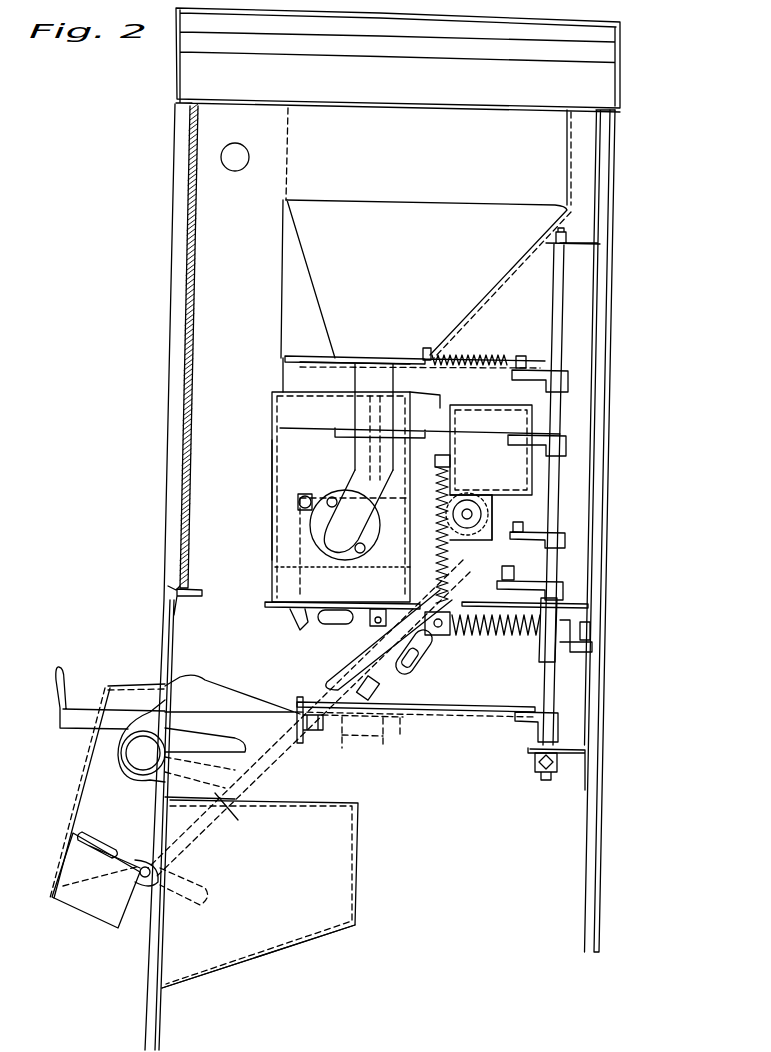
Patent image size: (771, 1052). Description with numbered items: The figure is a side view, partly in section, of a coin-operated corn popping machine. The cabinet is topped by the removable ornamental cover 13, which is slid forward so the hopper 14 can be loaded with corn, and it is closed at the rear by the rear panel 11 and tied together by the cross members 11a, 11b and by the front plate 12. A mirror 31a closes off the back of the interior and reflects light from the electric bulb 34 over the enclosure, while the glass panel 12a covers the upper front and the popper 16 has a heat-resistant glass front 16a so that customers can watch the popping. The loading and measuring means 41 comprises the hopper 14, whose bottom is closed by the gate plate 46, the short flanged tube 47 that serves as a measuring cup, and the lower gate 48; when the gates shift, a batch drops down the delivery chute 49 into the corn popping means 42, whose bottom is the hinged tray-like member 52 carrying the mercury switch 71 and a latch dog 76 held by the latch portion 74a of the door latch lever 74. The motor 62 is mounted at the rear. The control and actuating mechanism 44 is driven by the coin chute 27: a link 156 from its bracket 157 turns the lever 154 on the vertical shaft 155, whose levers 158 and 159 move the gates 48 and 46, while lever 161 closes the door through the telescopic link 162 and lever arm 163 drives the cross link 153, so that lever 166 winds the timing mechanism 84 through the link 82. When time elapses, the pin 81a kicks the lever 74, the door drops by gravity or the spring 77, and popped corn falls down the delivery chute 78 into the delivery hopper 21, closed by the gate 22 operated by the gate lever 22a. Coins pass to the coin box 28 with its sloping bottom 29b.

The ornamental cover 13 is at (603, 86).
The rear panel 11 is at (611, 392).
The cross member 11a is at (604, 178).
The cross member 11b is at (576, 752).
The mirror 31a is at (220, 238).
The electric bulb 34 is at (232, 157).
The front plate 12 is at (180, 596).
The latch dog 76 is at (184, 606).
The hopper 14 is at (517, 233).
The loading and measuring means 41 is at (378, 347).
The gate plate 46 is at (297, 360).
The vertical shaft 155 is at (560, 298).
The lever 159 is at (533, 372).
The lever 158 is at (545, 440).
The lever 166 is at (524, 528).
The control and actuating mechanism 44 is at (553, 567).
The cross link 153 is at (512, 573).
The lever arm 163 is at (524, 586).
The lever 161 is at (572, 650).
The lever 154 is at (540, 716).
The popper 16 is at (293, 390).
The heat-resistant glass front 16a is at (271, 458).
The glass panel 12a is at (325, 395).
The flanged tube 47 is at (347, 408).
The lower gate 48 is at (290, 440).
The delivery chute 49 is at (340, 525).
The corn popping means 42 is at (290, 478).
The tray-like member 52 is at (283, 578).
The latch portion 74a is at (300, 606).
The mercury switch 71 is at (331, 613).
The motor 62 is at (452, 488).
The door latch lever 74 is at (520, 470).
The timing mechanism 84 is at (490, 500).
The pin 81a is at (475, 513).
The link 82 is at (478, 523).
The spring 77 is at (447, 556).
The telescopic link 162 is at (486, 632).
The link 156 is at (448, 714).
The bracket 157 is at (305, 722).
The delivery chute 78 is at (265, 752).
The coin chute 27 is at (58, 724).
The delivery hopper 21 is at (95, 790).
The gate 22 is at (80, 900).
The gate lever 22a is at (68, 850).
The coin box 28 is at (360, 858).
The sloping bottom 29b is at (272, 960).